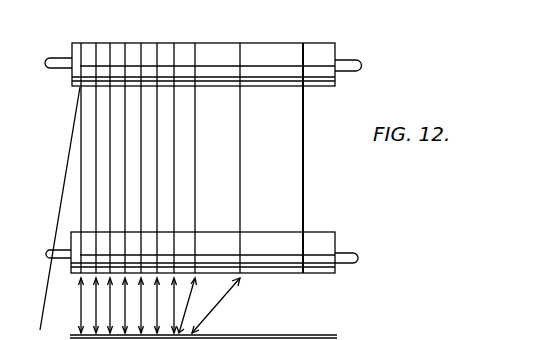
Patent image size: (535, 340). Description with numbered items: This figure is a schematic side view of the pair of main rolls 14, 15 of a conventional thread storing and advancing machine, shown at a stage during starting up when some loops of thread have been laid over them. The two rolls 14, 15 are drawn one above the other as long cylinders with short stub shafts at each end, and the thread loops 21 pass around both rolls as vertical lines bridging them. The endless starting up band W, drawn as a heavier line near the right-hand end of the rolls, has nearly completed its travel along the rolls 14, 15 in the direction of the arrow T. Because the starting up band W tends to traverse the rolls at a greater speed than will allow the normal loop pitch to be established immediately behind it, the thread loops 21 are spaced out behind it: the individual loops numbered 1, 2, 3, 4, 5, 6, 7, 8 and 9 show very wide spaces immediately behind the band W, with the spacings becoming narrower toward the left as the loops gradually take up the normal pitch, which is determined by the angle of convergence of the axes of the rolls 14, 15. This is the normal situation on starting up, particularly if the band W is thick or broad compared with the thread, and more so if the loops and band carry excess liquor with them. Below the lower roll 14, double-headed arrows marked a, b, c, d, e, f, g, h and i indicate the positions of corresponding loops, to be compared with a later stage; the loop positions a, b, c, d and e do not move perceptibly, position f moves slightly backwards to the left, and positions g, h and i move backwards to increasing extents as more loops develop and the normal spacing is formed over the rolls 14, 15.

The thread loop 1 is at (86, 148).
The thread loop 2 is at (96, 148).
The thread loop 3 is at (107, 148).
The thread loop 4 is at (121, 148).
The thread loop 5 is at (138, 148).
The thread loop 6 is at (156, 148).
The thread loop 7 is at (173, 148).
The thread loop 8 is at (194, 148).
The thread loop 9 is at (240, 148).
The roll 14 is at (73, 336).
The roll 15 is at (76, 232).
The thread loops 21 is at (109, 118).
The starting up band W is at (303, 131).
The direction of travel arrow T is at (213, 15).
The loop position a is at (82, 305).
The loop position b is at (99, 305).
The loop position c is at (107, 305).
The loop position d is at (123, 305).
The loop position e is at (138, 305).
The loop position f is at (155, 305).
The loop position g is at (169, 305).
The loop position h is at (187, 305).
The loop position i is at (216, 305).